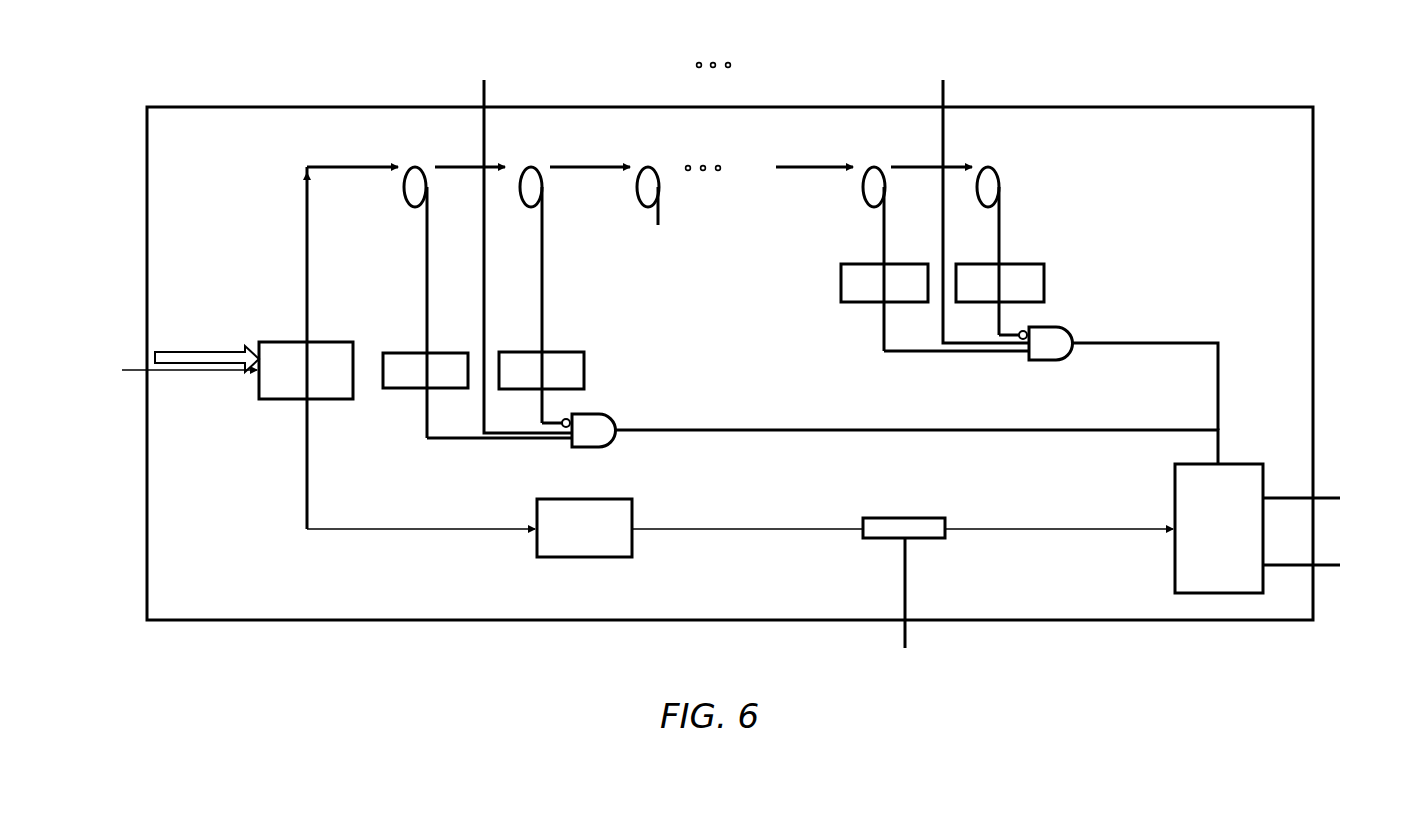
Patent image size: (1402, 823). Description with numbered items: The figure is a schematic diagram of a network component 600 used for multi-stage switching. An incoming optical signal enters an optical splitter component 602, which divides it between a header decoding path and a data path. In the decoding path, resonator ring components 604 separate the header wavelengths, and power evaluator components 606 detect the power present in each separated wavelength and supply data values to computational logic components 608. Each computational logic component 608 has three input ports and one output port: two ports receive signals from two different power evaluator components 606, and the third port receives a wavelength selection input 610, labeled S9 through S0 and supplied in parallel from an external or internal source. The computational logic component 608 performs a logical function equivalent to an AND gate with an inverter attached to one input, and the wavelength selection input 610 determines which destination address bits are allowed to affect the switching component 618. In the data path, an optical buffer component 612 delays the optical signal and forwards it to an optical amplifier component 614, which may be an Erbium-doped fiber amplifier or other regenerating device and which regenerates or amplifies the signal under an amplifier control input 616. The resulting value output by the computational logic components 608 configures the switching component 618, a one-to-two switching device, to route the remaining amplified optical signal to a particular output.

The network component 600 is at (145, 497).
The optical splitter component 602 is at (265, 342).
The resonator ring components 604 is at (404, 187).
The power evaluator components 606 is at (400, 350).
The computational logic components 608 is at (590, 450).
The wavelength selection inputs 610 is at (473, 65).
The optical buffer component 612 is at (636, 514).
The optical amplifier component 614 is at (928, 540).
The amplifier control input 616 is at (927, 670).
The switching component 618 is at (1172, 495).